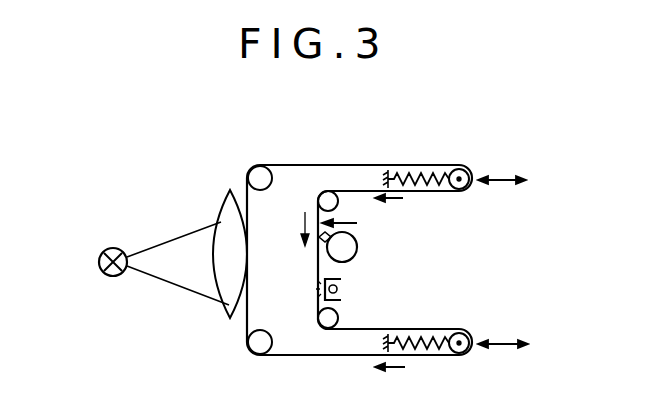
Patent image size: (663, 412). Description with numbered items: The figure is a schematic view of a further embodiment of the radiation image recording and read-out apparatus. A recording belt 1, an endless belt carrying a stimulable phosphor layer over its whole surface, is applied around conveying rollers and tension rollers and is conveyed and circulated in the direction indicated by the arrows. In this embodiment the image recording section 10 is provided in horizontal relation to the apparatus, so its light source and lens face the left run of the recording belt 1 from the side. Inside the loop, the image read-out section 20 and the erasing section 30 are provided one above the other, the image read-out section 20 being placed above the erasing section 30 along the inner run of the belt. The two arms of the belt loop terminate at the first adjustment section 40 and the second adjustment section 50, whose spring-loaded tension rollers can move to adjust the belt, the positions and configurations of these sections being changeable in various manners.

The recording belt 1 is at (320, 165).
The image recording section 10 is at (184, 312).
The image read-out section 20 is at (380, 237).
The erasing section 30 is at (363, 289).
The first adjustment section 40 is at (448, 144).
The second adjustment section 50 is at (463, 308).